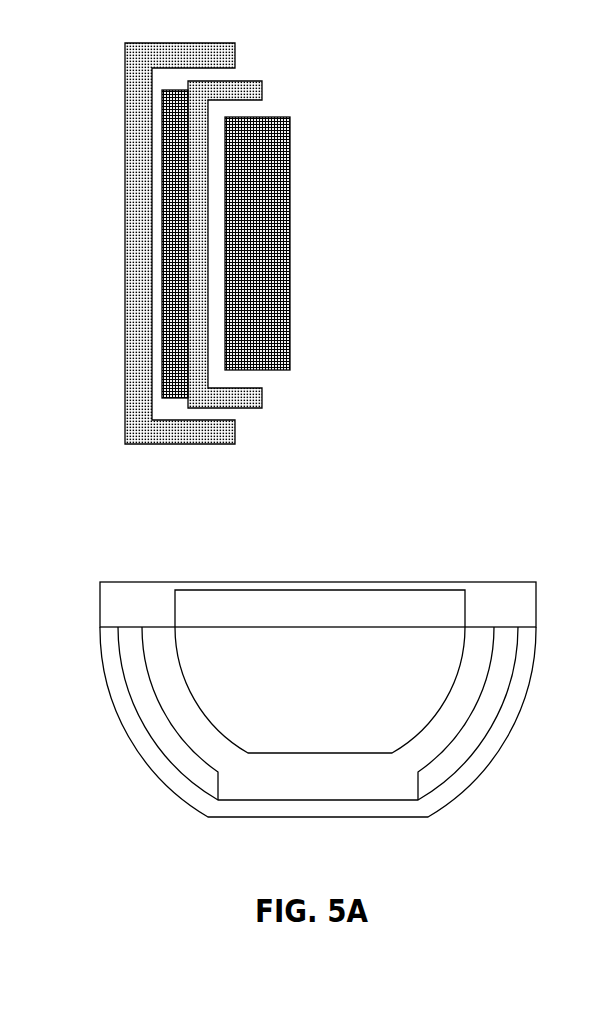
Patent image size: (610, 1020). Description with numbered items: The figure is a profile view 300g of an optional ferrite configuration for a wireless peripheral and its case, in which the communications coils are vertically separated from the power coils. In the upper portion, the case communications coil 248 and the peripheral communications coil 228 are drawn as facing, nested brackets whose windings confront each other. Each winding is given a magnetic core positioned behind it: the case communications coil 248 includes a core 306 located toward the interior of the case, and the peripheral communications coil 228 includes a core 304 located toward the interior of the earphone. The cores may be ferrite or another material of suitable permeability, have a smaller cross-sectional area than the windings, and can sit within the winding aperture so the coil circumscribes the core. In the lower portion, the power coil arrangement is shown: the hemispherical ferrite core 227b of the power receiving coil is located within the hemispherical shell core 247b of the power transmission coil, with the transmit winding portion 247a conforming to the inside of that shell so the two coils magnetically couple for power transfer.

The profile view 300g is at (449, 62).
The case communications coil 248 is at (152, 43).
The case core 306 is at (180, 90).
The peripheral communications coil 228 is at (253, 81).
The earphone core 304 is at (290, 370).
The magnetic core of power receiving coil 227b is at (203, 590).
The winding portion of power transmission coil 247a is at (140, 718).
The magnetic core of power transmission coil 247b is at (161, 778).